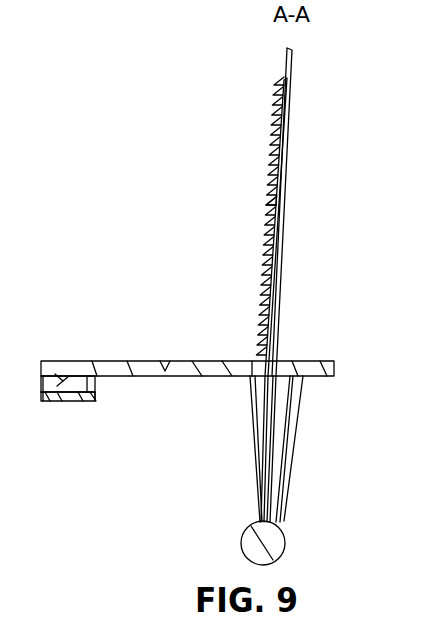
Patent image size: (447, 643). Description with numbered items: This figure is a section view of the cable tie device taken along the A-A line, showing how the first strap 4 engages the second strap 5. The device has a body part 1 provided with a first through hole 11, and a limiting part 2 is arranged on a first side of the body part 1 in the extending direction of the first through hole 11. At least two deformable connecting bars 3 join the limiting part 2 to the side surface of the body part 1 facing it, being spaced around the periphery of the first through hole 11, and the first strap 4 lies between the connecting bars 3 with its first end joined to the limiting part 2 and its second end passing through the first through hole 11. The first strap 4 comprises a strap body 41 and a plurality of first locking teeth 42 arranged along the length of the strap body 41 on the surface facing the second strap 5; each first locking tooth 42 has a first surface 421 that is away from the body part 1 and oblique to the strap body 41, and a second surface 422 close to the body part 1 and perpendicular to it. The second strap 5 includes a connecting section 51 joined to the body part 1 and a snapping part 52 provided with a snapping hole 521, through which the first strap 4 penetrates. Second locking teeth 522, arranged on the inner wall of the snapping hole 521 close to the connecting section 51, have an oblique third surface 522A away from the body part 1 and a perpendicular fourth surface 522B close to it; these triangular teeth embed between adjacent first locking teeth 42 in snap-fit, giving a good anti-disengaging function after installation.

The body part 1 is at (312, 371).
The first through hole 11 is at (294, 374).
The limiting part 2 is at (275, 545).
The connecting bars 3 is at (299, 439).
The first strap 4 is at (289, 285).
The strap body 41 is at (286, 178).
The first locking teeth 42 is at (286, 207).
The first surface 421 is at (279, 213).
The second surface 422 is at (277, 209).
The second strap 5 is at (111, 394).
The connecting section 51 is at (165, 371).
The snapping part 52 is at (97, 401).
The snapping hole 521 is at (88, 382).
The second locking teeth 522 is at (56, 390).
The third surface 522A is at (63, 375).
The fourth surface 522B is at (69, 380).